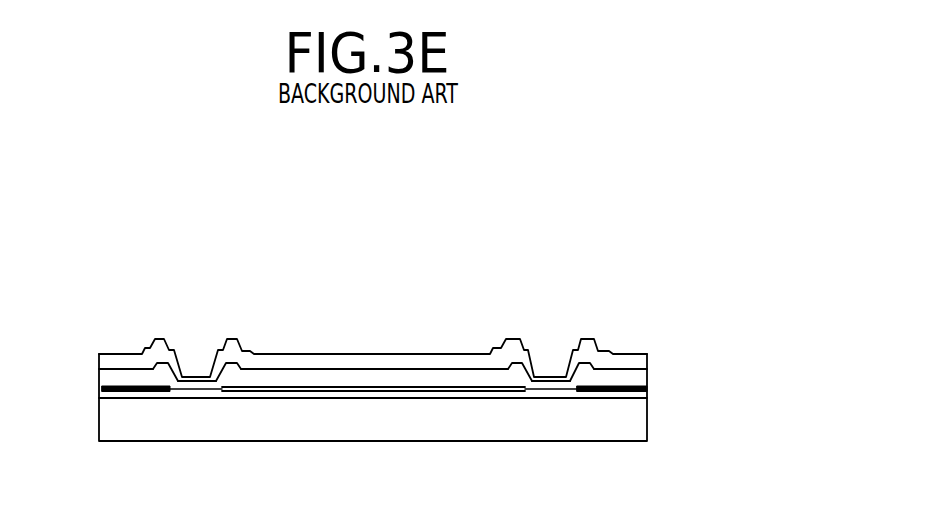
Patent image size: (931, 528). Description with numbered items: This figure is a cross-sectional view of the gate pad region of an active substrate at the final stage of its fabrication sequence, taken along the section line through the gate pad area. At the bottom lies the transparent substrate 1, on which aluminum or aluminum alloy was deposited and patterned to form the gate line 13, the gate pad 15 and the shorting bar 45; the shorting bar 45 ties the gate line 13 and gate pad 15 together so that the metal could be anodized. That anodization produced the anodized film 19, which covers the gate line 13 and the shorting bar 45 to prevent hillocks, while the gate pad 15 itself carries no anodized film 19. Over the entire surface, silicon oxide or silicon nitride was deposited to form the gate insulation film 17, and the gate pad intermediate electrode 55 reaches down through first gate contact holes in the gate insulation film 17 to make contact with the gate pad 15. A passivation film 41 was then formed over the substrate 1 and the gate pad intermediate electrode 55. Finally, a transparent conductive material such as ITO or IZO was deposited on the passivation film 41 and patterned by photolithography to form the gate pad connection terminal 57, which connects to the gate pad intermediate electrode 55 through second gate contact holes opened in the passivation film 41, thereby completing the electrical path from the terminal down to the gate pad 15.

The transparent substrate 1 is at (630, 424).
The gate line 13 is at (137, 398).
The gate pad 15 is at (198, 395).
The gate insulation film 17 is at (315, 381).
The anodized film 19 is at (465, 390).
The passivation film 41 is at (139, 360).
The shorting bar 45 is at (412, 395).
The gate pad intermediate electrode 55 is at (190, 382).
The gate pad connection terminal 57 is at (200, 378).